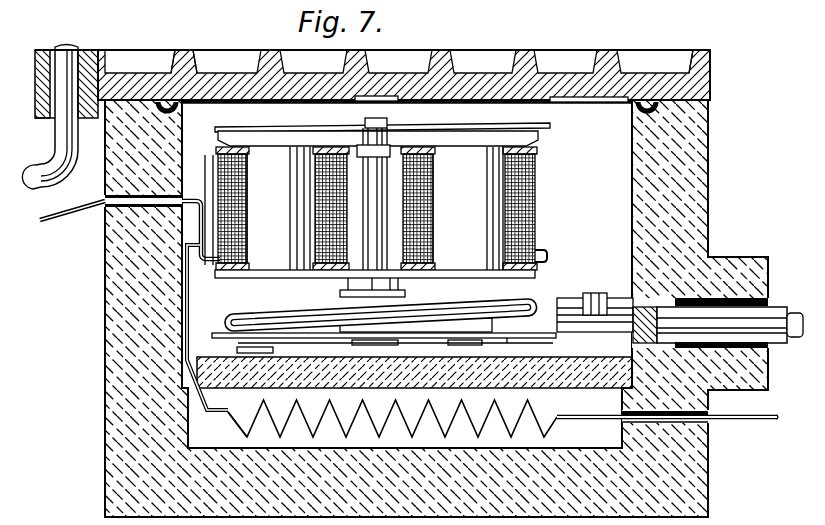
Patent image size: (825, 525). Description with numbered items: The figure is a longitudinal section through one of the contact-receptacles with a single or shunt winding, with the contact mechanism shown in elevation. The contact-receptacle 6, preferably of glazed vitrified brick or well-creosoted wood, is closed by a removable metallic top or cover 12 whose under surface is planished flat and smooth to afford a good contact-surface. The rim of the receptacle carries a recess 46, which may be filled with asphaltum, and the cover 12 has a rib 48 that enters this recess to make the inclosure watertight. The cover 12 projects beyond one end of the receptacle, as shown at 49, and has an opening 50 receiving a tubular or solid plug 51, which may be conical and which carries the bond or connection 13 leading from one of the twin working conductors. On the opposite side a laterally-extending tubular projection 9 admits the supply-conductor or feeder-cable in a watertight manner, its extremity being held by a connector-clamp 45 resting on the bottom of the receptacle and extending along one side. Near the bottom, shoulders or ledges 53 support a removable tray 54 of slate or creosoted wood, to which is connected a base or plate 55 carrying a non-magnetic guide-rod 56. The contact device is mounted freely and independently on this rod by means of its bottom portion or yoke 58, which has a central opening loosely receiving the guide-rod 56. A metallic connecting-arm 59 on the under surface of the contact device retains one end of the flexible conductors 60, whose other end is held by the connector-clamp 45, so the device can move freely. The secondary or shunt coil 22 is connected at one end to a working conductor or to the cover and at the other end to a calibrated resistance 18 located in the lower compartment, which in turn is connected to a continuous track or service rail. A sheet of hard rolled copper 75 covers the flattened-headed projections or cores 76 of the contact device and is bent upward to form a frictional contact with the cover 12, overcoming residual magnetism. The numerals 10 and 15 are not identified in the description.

The contact-receptacle 6 is at (698, 172).
The laterally-extending tubular projection 9 is at (733, 270).
The terminal sleeve 10 is at (769, 349).
The top or cover 12 is at (470, 65).
The bond or connection 13 is at (66, 50).
The lead wire 15 is at (746, 419).
The calibrated resistance 18 is at (404, 418).
The secondary or shunt coil 22 is at (59, 214).
The connector-clamp 45 is at (572, 343).
The recess 46 is at (177, 108).
The rib 48 is at (164, 100).
The projecting portion of cover 49 is at (38, 91).
The opening 50 is at (55, 122).
The plug 51 is at (82, 51).
The shoulders or ledges 53 is at (190, 405).
The removable tray 54 is at (222, 412).
The base or plate 55 is at (272, 350).
The guide-rod 56 is at (368, 163).
The bottom portion or yoke 58 is at (375, 288).
The metallic connecting-arm 59 is at (392, 306).
The flexible conductors 60 is at (366, 315).
The copper contact sheet 75 is at (407, 128).
The headed projections or cores 76 is at (376, 208).